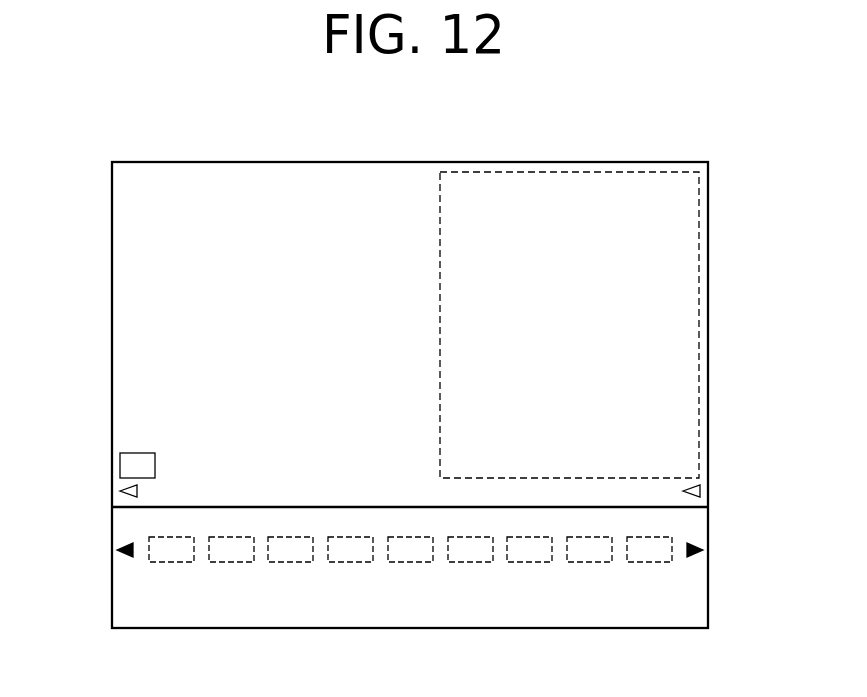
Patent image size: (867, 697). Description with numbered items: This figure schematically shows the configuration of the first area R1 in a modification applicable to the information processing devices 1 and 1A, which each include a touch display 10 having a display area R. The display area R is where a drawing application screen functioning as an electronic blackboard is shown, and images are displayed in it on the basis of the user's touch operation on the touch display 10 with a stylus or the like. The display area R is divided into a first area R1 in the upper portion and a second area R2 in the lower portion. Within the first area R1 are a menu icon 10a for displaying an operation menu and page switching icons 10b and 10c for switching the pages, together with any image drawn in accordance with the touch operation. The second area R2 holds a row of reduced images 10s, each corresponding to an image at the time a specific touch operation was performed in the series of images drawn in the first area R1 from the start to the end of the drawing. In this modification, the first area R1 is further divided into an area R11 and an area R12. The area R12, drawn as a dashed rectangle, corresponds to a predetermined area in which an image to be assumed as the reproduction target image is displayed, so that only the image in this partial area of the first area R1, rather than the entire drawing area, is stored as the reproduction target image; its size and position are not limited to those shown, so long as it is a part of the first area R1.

The information processing device 1 is at (440, 143).
The information processing device 1A is at (403, 369).
The touch display 10 is at (709, 212).
The menu icon 10a is at (139, 452).
The page switching icon 10b is at (138, 491).
The page switching icon 10c is at (700, 490).
The reduced image 10s is at (181, 562).
The display area R is at (50, 320).
The first area R1 is at (105, 162).
The second area R2 is at (105, 507).
The area R11 is at (282, 198).
The area R12 is at (580, 198).